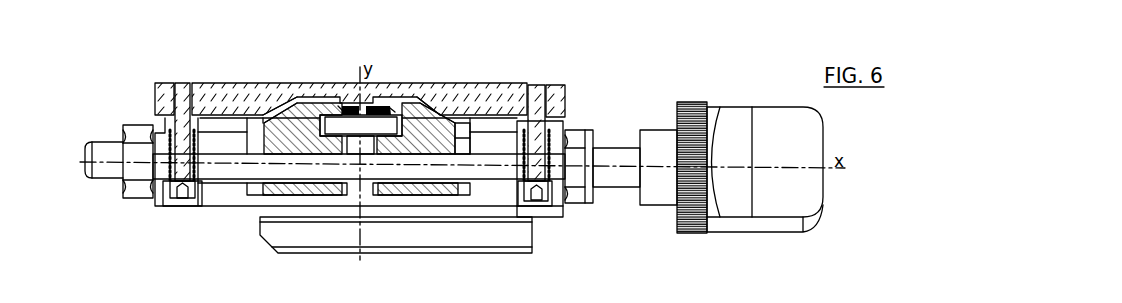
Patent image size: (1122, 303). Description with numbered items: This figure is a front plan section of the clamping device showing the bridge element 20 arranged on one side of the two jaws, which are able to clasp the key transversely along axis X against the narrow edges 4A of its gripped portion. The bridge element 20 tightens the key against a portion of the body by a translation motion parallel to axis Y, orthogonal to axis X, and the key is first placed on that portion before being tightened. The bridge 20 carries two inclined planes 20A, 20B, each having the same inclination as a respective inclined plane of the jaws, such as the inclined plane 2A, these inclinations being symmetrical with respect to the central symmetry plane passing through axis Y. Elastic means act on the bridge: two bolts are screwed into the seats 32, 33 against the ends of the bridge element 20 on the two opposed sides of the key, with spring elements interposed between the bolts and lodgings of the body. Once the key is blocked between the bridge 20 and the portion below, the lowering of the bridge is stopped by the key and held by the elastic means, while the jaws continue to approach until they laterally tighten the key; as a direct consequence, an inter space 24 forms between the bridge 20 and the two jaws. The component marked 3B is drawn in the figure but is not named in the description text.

The bridge element 20 is at (229, 96).
The inclined plane of the bridge 20A is at (287, 95).
The inclined plane of the bridge 20B is at (439, 94).
The inter space 24 is at (294, 105).
The threaded seat for bolt 32 is at (183, 92).
The threaded seat for bolt 33 is at (533, 98).
The inclined plane of the jaw 2A is at (293, 105).
The second wedge member 3B is at (434, 120).
The narrow edges of the key 4A is at (292, 163).